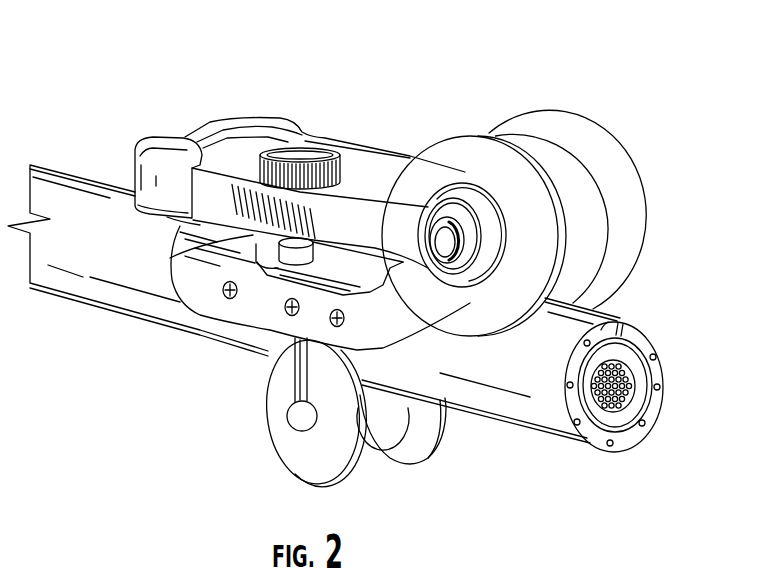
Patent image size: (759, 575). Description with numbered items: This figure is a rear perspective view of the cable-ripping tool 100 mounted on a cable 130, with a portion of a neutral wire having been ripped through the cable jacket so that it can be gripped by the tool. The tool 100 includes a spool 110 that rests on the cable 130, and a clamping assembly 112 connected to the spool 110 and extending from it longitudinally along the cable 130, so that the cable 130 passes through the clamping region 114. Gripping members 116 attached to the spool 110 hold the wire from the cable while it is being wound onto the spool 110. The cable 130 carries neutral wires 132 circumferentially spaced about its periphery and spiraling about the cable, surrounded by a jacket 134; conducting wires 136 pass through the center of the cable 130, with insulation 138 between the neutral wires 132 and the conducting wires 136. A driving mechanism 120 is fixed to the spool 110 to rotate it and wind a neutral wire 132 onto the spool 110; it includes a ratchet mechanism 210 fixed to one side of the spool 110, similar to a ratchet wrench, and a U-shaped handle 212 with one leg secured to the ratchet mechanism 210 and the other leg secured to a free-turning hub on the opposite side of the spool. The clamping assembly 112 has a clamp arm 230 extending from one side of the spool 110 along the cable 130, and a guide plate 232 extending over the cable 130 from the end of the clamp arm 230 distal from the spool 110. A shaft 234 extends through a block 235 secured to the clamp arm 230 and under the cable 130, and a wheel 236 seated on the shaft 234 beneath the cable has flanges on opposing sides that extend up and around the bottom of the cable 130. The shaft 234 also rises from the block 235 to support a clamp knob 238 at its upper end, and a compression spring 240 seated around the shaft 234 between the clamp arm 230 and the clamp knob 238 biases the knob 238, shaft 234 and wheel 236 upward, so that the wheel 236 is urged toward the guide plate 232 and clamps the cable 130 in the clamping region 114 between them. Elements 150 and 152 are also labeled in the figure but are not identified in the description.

The cable-ripping tool 100 is at (232, 76).
The spool 110 is at (537, 204).
The clamping assembly 112 is at (227, 376).
The clamped region 114 is at (410, 380).
The gripping members 116 is at (557, 189).
The driving mechanism 120 is at (434, 172).
The cable 130 is at (83, 310).
The neutral wires 132 is at (652, 358).
The jacket 134 is at (653, 407).
The conducting wires 136 is at (627, 407).
The insulation 138 is at (620, 425).
The rear roller flange 150 is at (590, 220).
The roller flanges 152 is at (465, 157).
The ratchet mechanism 210 is at (276, 228).
The handle 212 is at (176, 140).
The clamp arm 230 is at (270, 333).
The guide plate 232 is at (183, 217).
The shaft 234 is at (283, 465).
The block 235 is at (270, 258).
The wheel 236 is at (353, 460).
The clamp knob 238 is at (326, 150).
The compression spring 240 is at (252, 243).